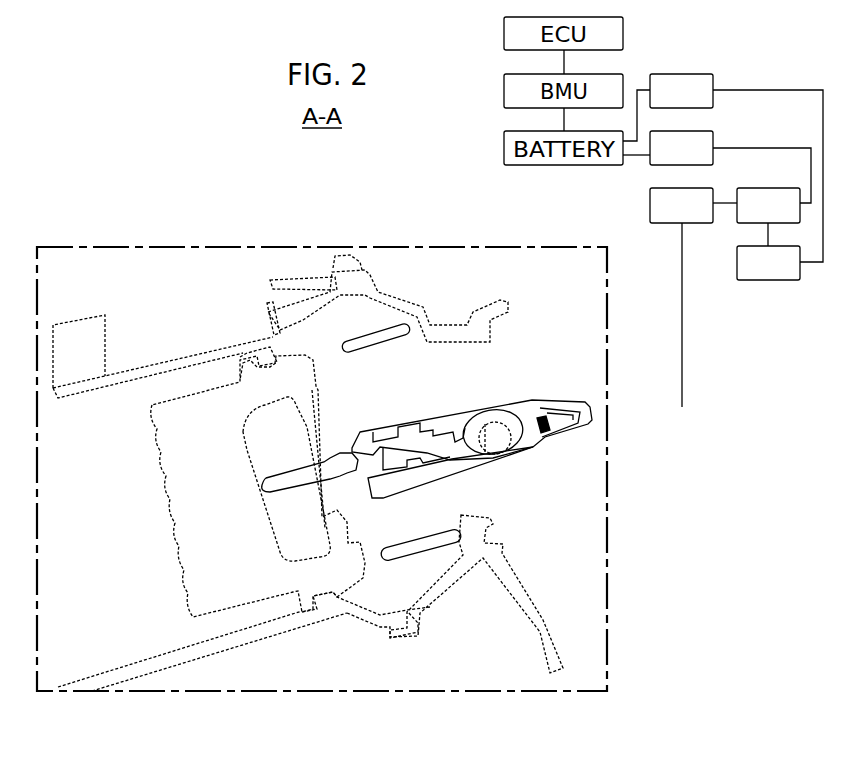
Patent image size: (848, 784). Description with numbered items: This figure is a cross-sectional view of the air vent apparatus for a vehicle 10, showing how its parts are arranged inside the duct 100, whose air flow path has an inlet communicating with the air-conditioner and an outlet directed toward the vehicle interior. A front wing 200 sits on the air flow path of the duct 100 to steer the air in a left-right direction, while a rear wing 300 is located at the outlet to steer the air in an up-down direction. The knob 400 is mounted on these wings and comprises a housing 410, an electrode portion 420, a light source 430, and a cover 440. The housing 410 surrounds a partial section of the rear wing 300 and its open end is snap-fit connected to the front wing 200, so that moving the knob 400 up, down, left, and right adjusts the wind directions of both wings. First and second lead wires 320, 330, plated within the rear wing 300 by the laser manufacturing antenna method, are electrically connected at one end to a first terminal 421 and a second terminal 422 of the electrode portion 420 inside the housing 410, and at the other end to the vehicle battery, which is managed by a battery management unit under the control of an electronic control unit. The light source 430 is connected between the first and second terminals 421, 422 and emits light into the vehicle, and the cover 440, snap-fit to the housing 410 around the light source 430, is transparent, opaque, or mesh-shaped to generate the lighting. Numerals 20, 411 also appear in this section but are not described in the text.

The air vent apparatus for a vehicle 10 is at (158, 322).
The bracket 20 is at (480, 323).
The duct 100 is at (203, 661).
The front wing 200 is at (199, 405).
The rear wing 300 is at (392, 329).
The first lead wire 320 is at (700, 160).
The second lead wire 330 is at (700, 103).
The knob 400 is at (527, 411).
The housing 410 is at (527, 453).
The connector pin 411 is at (303, 477).
The electrode portion 420 is at (700, 217).
The first terminal 421 is at (787, 217).
The second terminal 422 is at (787, 275).
The light source 430 is at (590, 425).
The cover 440 is at (587, 405).